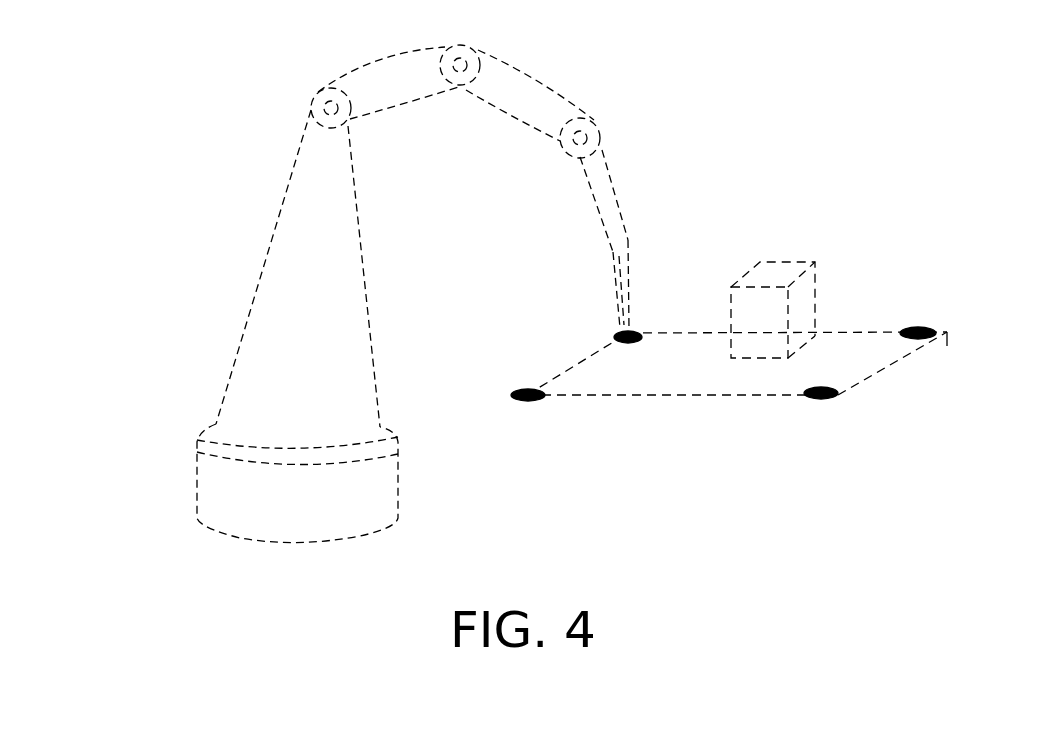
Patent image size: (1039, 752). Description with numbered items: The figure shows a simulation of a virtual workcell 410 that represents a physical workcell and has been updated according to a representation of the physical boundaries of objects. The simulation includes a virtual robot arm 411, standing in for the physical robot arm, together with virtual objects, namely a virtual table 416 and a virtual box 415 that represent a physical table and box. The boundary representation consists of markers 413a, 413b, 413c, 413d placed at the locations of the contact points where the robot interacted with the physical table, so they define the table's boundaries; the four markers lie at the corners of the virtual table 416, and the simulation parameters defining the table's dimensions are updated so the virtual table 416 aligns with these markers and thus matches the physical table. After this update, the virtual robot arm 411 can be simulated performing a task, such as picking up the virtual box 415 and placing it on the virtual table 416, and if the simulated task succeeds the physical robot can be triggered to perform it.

The virtual workcell 410 is at (938, 171).
The virtual robot arm 411 is at (292, 166).
The marker 413a is at (614, 334).
The marker 413b is at (520, 391).
The marker 413c is at (917, 333).
The marker 413d is at (820, 395).
The virtual box 415 is at (787, 262).
The virtual table 416 is at (641, 396).